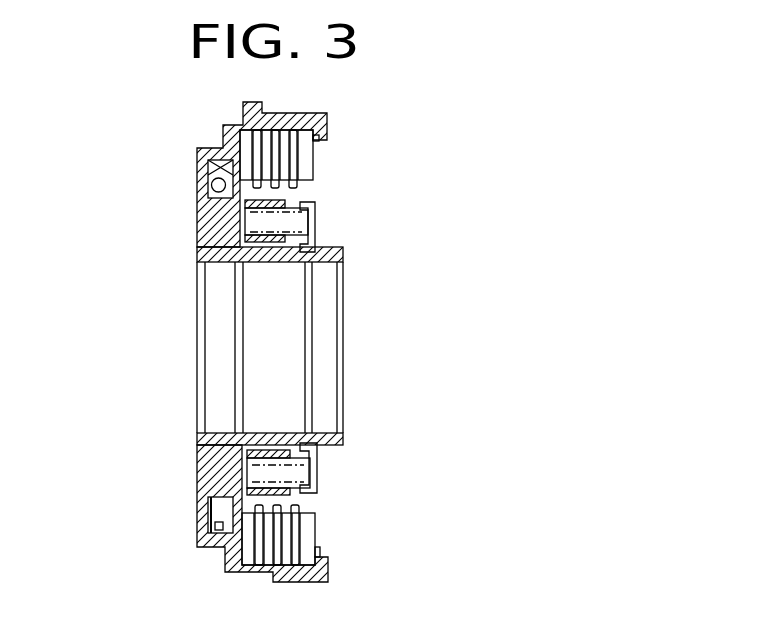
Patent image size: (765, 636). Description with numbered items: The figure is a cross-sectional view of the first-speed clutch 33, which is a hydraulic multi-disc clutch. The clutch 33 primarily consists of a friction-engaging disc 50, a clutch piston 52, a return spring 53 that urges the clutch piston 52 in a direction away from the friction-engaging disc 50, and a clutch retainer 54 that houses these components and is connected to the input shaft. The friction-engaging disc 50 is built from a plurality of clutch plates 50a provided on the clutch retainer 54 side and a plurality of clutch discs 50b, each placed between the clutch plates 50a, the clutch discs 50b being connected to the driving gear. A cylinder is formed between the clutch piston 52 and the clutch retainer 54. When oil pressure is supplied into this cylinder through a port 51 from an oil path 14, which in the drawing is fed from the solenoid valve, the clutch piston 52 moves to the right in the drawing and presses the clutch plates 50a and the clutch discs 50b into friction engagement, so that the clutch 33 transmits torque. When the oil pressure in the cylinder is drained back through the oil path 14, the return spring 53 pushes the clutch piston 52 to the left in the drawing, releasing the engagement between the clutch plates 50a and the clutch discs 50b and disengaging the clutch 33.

The first-speed clutch 33 is at (152, 152).
The friction-engaging disc 50 is at (336, 343).
The clutch plates 50a is at (312, 168).
The clutch discs 50b is at (297, 187).
The port 51 is at (263, 263).
The clutch piston 52 is at (217, 476).
The return spring 53 is at (312, 473).
The clutch retainer 54 is at (197, 519).
The oil path 14 is at (265, 262).